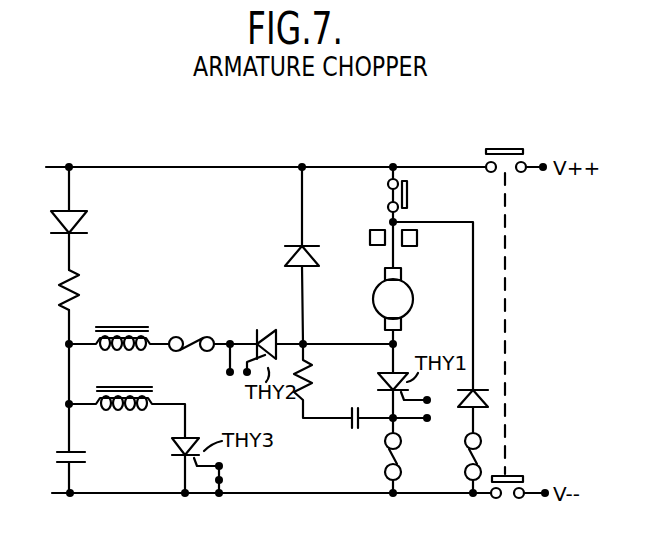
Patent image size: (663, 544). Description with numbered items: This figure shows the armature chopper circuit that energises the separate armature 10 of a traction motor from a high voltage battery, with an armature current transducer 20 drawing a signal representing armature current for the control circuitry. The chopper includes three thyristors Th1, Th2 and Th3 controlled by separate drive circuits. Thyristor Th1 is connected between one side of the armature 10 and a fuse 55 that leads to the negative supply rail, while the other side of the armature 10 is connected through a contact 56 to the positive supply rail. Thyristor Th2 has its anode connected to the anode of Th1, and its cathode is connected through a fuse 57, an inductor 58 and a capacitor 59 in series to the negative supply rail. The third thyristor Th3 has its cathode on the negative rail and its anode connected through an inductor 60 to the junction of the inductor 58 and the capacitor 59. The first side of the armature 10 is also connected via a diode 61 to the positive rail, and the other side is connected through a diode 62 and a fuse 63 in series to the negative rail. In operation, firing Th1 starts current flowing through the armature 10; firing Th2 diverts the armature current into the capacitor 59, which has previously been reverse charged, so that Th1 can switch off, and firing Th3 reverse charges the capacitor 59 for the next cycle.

The armature 10 is at (413, 290).
The armature current transducer 20 is at (417, 238).
The fuse 55 is at (400, 452).
The contact 56 is at (408, 197).
The fuse 57 is at (191, 351).
The inductor 58 is at (110, 327).
The capacitor 59 is at (57, 455).
The inductor 60 is at (102, 408).
The diode 61 is at (282, 257).
The diode 62 is at (462, 401).
The fuse 63 is at (461, 462).